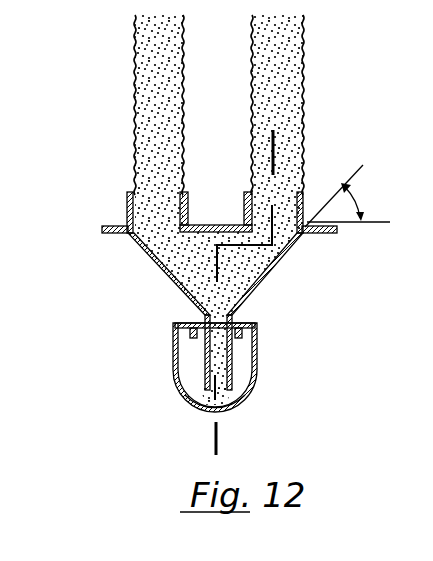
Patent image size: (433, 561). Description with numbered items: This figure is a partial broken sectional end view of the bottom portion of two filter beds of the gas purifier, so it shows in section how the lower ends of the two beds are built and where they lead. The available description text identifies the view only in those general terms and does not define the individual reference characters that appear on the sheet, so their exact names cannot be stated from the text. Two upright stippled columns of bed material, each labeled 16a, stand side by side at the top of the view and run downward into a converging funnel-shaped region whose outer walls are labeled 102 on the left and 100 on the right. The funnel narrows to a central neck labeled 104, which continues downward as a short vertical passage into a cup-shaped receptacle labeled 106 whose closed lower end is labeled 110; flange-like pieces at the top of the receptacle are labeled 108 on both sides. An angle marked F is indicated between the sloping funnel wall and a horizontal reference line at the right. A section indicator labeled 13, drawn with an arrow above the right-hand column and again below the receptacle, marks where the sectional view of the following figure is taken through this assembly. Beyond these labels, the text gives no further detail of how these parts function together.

The fibrous material column 16a is at (126, 75).
The section line 13- 13 is at (280, 144).
The funnel angle F is at (356, 198).
The funnel right wall 100 is at (272, 262).
The funnel left wall 102 is at (158, 266).
The discharge tube 104 is at (245, 313).
The cup-shaped receptacle 106 is at (196, 366).
The receptacle lid flanges 108 is at (183, 323).
The receptacle bottom 110 is at (192, 408).